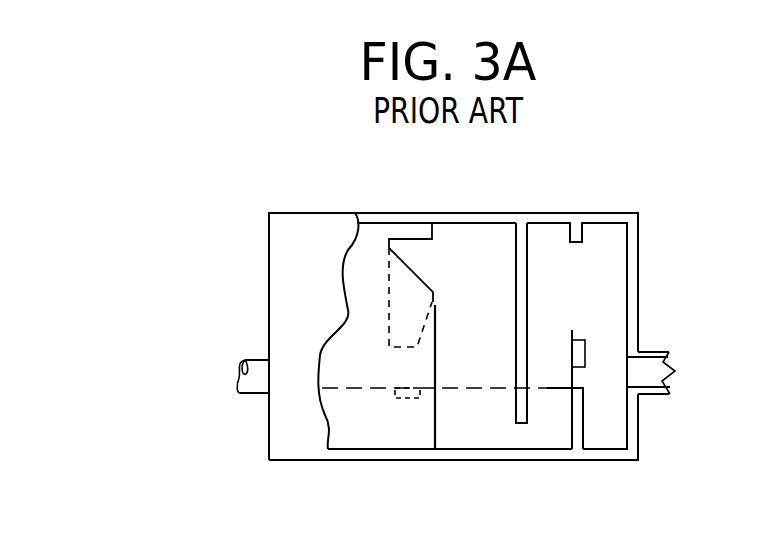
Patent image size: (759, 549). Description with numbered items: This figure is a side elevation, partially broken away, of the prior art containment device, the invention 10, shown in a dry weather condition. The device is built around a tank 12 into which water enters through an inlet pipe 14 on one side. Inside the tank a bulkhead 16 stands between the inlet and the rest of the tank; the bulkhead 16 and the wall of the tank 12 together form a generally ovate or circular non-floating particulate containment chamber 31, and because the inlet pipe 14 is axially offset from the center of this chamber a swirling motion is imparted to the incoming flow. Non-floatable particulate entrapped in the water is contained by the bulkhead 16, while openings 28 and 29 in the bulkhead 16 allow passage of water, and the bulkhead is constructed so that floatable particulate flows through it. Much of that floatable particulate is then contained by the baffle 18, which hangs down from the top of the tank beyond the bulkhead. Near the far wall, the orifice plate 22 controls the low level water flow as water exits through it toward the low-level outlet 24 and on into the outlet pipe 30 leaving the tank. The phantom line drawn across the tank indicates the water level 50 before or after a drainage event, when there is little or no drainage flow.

The invention 10 is at (257, 175).
The tank 12 is at (312, 213).
The inlet pipe 14 is at (256, 360).
The bulkhead 16 is at (437, 306).
The baffle 18 is at (527, 242).
The orifice plate 22 is at (570, 378).
The low-level outlet 24 is at (588, 378).
The opening in bulkhead 28 is at (398, 277).
The opening in bulkhead 29 is at (417, 400).
The outlet pipe 30 is at (648, 350).
The non-floating particulate containment chamber 31 is at (368, 372).
The water level 50 is at (485, 388).